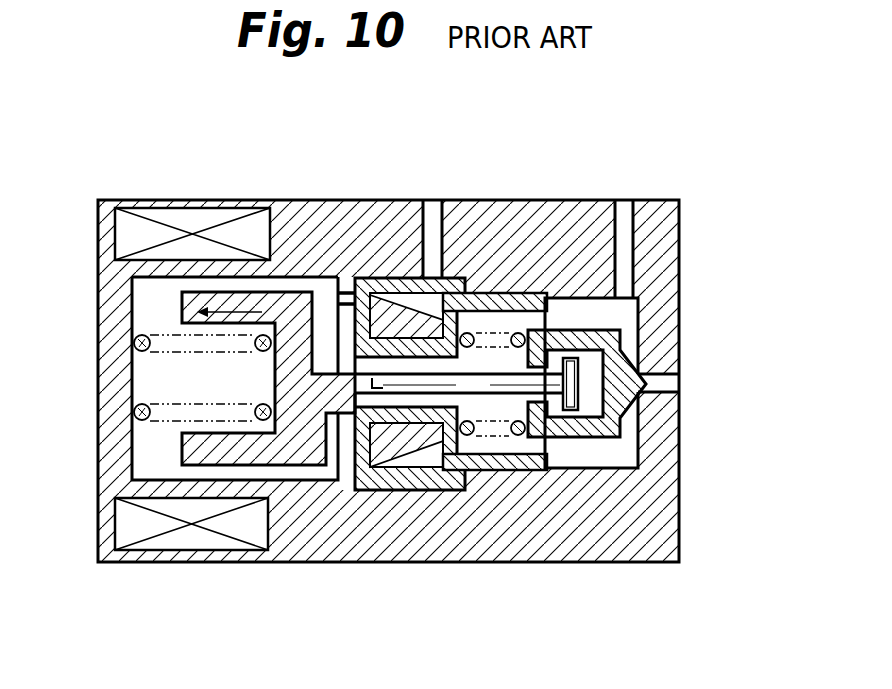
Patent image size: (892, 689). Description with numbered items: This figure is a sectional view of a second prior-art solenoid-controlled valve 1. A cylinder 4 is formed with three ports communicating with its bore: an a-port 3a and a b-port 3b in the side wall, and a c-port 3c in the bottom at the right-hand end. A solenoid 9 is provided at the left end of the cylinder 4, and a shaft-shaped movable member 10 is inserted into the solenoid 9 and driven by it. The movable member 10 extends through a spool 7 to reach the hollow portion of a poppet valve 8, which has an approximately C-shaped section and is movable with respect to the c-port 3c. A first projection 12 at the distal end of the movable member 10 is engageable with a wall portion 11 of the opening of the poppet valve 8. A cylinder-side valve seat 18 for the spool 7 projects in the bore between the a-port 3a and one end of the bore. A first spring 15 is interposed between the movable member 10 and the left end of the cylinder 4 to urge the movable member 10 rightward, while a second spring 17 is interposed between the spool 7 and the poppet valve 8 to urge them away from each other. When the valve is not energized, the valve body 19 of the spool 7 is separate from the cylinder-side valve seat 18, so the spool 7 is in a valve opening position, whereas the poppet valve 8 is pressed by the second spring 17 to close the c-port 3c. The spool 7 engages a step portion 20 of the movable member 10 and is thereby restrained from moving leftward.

The solenoid-controlled valve 1 is at (697, 178).
The a-port 3a is at (442, 243).
The b-port 3b is at (618, 217).
The c-port 3c is at (652, 378).
The cylinder 4 is at (535, 255).
The spool 7 is at (473, 462).
The poppet valve 8 is at (630, 400).
The solenoid 9 is at (178, 537).
The movable member 10 is at (182, 445).
The wall portion 11 is at (517, 436).
The first projection 12 is at (572, 412).
The first spring 15 is at (140, 333).
The second spring 17 is at (515, 438).
The cylinder-side valve seat 18 is at (347, 293).
The valve body 19 is at (393, 440).
The step portion 20 is at (337, 405).